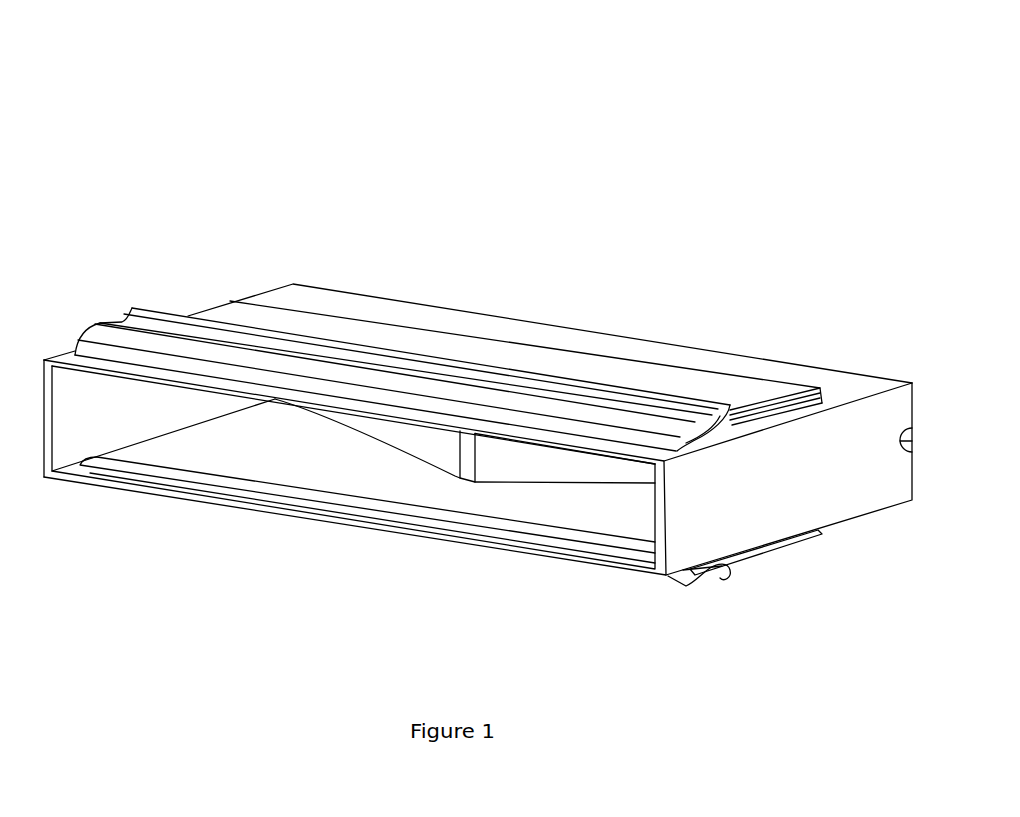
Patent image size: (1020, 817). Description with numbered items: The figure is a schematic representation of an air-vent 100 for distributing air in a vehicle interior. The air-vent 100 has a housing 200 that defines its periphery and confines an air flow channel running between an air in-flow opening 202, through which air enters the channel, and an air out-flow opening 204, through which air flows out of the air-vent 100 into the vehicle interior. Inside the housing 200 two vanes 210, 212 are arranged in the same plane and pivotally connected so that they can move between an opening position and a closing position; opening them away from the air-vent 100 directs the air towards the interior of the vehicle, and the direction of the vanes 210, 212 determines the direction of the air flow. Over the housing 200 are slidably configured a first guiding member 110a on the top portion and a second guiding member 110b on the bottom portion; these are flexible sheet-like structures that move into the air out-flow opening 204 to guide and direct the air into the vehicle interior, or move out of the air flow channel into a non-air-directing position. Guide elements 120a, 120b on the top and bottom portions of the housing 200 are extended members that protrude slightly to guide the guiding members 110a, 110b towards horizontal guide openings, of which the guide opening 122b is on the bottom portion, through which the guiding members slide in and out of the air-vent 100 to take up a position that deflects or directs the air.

The air-vent 100 is at (577, 214).
The first guiding member 110a is at (780, 382).
The second guiding member 110b is at (813, 537).
The guide element 120a is at (88, 328).
The guide element 120b is at (727, 567).
The guide opening 122b is at (583, 538).
The housing 200 is at (700, 350).
The air in-flow opening 202 is at (917, 409).
The air out-flow opening 204 is at (249, 440).
The vane 210 is at (372, 437).
The vane 212 is at (515, 483).